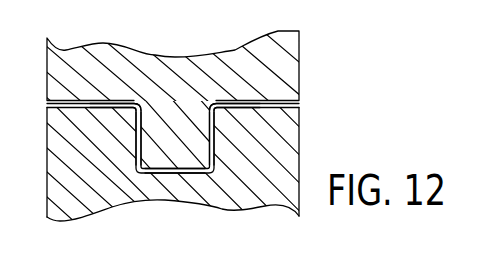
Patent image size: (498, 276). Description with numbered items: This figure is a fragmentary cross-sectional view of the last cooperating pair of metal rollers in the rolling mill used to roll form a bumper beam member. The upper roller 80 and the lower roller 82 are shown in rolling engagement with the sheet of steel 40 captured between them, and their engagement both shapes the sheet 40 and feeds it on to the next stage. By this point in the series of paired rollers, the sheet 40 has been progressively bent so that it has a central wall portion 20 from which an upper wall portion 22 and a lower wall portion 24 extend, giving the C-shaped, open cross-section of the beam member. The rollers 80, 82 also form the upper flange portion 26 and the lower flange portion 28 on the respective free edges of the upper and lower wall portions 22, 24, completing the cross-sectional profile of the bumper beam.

The roller 80 is at (283, 76).
The roller 82 is at (286, 133).
The central wall portion 20 is at (163, 175).
The upper wall portion 22 is at (136, 143).
The lower wall portion 24 is at (214, 137).
The upper flange portion 26 is at (125, 100).
The lower flange portion 28 is at (231, 100).
The sheet of steel 40 is at (183, 169).